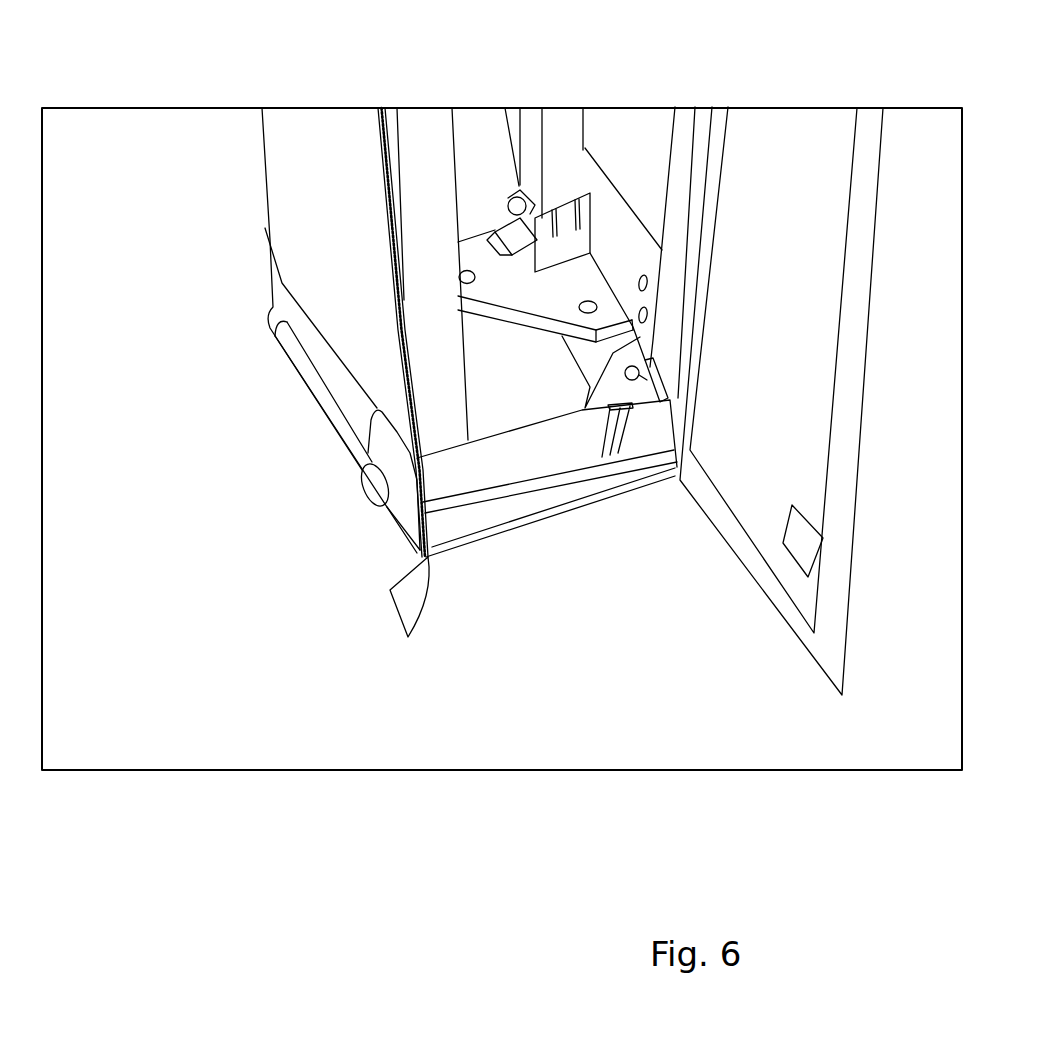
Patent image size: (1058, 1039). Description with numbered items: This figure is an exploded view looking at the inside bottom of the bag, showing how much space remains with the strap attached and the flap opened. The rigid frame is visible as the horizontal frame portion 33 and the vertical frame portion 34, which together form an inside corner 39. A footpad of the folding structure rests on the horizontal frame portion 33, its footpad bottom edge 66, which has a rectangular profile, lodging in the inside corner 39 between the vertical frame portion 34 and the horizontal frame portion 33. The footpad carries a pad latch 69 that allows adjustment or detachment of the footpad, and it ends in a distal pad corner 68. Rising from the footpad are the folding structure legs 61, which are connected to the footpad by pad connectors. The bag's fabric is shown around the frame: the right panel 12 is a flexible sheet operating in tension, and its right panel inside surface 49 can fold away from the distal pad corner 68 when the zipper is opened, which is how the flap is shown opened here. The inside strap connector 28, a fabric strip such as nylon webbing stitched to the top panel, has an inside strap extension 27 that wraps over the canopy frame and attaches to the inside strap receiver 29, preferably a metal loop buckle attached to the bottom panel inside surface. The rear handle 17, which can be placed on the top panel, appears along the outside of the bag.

The right panel 12 is at (797, 403).
The rear handle 17 is at (323, 410).
The inside strap extension 27 is at (507, 453).
The inside strap connector 28 is at (592, 453).
The inside strap receiver 29 is at (613, 436).
The horizontal frame portion 33 is at (580, 350).
The vertical frame portion 34 is at (608, 207).
The inside corner 39 is at (652, 356).
The right panel inside surface 49 is at (770, 528).
The folding structure legs 61 is at (424, 136).
The footpad bottom edge 66 is at (612, 284).
The distal pad corner 68 is at (429, 562).
The pad latch 69 is at (510, 203).